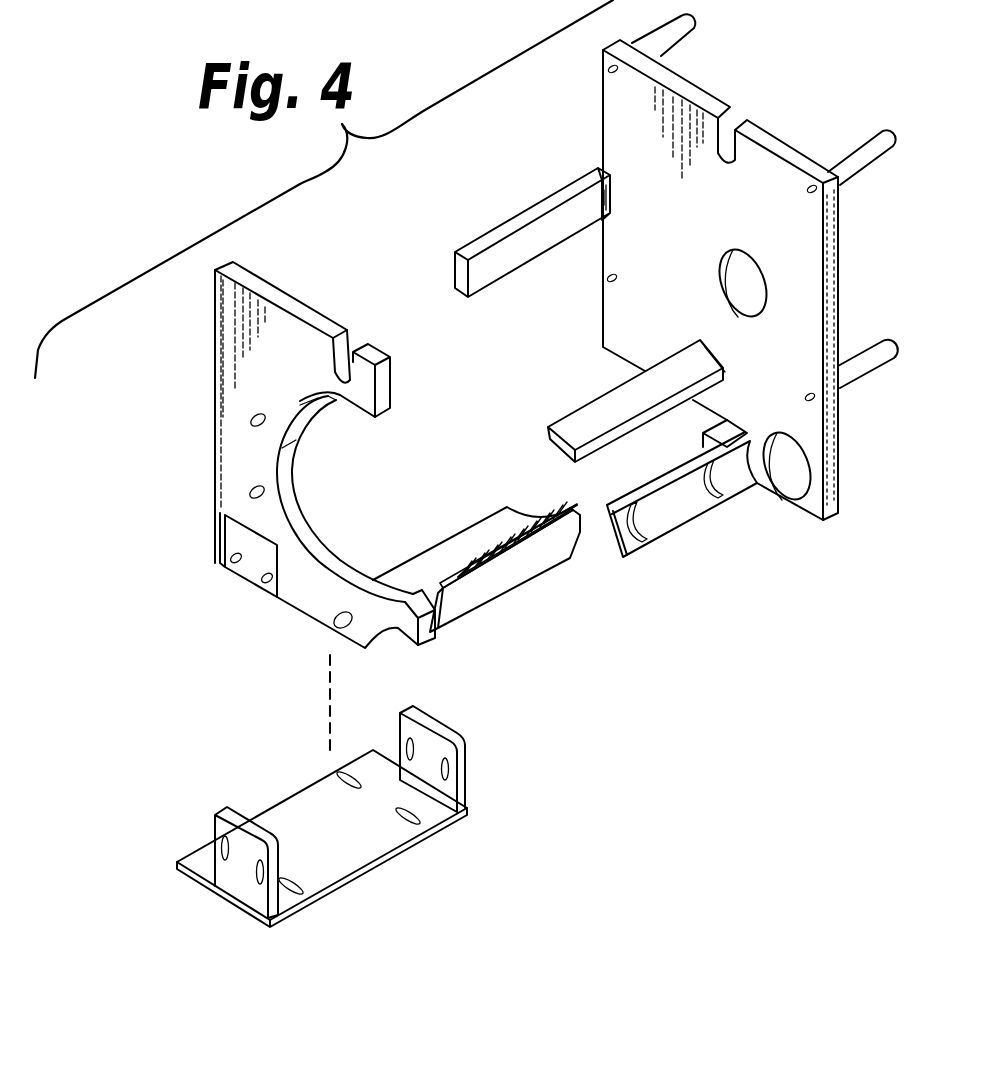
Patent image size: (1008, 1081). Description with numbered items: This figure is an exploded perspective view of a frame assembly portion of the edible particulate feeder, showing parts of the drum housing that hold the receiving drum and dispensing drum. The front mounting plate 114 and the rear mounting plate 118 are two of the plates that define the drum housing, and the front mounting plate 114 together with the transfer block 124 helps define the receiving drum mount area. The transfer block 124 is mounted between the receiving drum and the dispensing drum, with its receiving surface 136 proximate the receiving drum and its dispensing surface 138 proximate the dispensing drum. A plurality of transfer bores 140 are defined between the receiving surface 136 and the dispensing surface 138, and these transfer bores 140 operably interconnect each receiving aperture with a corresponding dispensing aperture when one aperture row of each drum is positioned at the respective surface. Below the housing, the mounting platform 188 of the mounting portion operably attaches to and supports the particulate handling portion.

The front mounting plate 114 is at (214, 487).
The rear mounting plate 118 is at (700, 93).
The transfer block 124 is at (460, 627).
The receiving surface 136 is at (460, 574).
The dispensing surface 138 is at (513, 597).
The transfer bores 140 is at (507, 540).
The mounting platform 188 is at (227, 893).